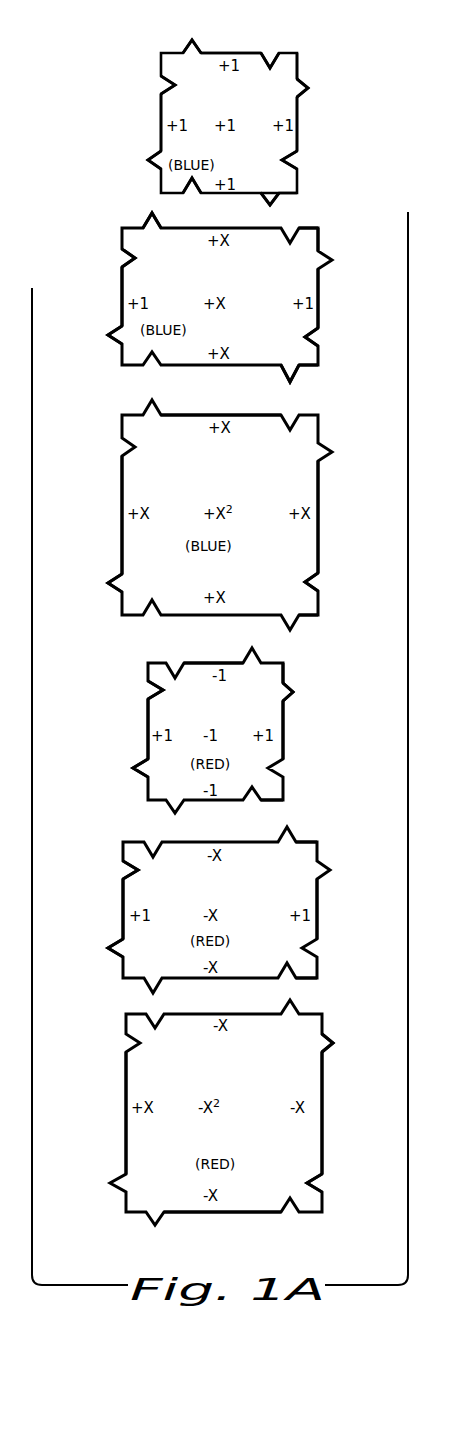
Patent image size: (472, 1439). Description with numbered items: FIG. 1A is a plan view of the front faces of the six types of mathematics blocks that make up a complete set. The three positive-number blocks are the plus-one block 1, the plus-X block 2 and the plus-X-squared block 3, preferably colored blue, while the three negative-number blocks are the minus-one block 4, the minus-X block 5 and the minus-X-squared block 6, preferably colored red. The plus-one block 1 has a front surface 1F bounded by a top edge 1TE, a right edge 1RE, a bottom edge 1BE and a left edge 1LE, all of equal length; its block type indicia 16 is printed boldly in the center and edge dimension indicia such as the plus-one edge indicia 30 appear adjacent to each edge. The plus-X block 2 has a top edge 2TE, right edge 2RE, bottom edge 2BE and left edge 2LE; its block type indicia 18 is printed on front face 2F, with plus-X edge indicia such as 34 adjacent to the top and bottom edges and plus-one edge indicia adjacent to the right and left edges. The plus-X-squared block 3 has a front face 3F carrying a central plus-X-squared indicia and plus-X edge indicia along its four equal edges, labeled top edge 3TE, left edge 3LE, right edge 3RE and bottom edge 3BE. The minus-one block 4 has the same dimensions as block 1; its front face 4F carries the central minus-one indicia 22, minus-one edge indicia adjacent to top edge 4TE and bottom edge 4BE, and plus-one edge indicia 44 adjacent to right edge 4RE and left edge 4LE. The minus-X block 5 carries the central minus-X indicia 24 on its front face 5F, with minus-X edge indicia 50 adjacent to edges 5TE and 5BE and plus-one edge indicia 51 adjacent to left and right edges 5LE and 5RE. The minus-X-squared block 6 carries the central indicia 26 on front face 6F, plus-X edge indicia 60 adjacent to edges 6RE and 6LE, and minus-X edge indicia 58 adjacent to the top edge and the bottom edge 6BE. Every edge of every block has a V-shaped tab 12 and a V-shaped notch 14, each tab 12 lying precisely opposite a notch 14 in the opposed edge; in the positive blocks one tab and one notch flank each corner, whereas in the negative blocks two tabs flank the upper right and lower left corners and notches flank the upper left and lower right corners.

The +1 block 1 is at (305, 125).
The +X block 2 is at (330, 312).
The +X² block 3 is at (330, 505).
The −1 block 4 is at (293, 760).
The −X block 5 is at (322, 924).
The −X² block 6 is at (330, 1092).
The V-shaped tab 12 is at (189, 44).
The V-shaped notch 14 is at (271, 58).
The +1 block type indicia 16 is at (240, 125).
The +X block type indicia 18 is at (222, 316).
The −1 block type indicia 22 is at (235, 730).
The −X block type indicia 24 is at (245, 910).
The −X² block type indicia 26 is at (245, 1105).
The +1 edge indicia 30 is at (240, 186).
The +X edge indicia 34 is at (210, 250).
The +1 edge indicia 44 is at (185, 730).
The top edge term -X of piece 5 50 is at (215, 868).
The left edge term +1 of piece 5 51 is at (138, 930).
The −X edge indicia 58 is at (225, 1050).
The +X edge indicia 60 is at (143, 1130).
The top edge 1TE is at (245, 40).
The front surface 1F is at (297, 64).
The left edge 1LE is at (161, 128).
The right edge 1RE is at (297, 148).
The bottom edge 1BE is at (285, 194).
The top edge 2TE is at (305, 228).
The front face 2F is at (318, 256).
The left edge 2LE is at (122, 292).
The right edge 2RE is at (318, 294).
The bottom edge 2BE is at (305, 365).
The top edge of piece 3 3TE is at (264, 415).
The left edge of piece 3 3LE is at (122, 498).
The front face 3F is at (318, 479).
The right edge of piece 3 3RE is at (318, 556).
The bottom edge of piece 3 3BE is at (305, 615).
The top edge 4TE is at (222, 663).
The left edge 4LE is at (148, 732).
The right edge 4RE is at (283, 680).
The front face 4F is at (283, 732).
The bottom edge 4BE is at (270, 800).
The top edge 5TE is at (317, 845).
The left edge 5LE is at (123, 895).
The front face 5F is at (317, 898).
The right edge 5RE is at (317, 938).
The bottom edge 5BE is at (305, 978).
The left edge 6LE is at (126, 1082).
The front face 6F is at (322, 1129).
The right edge 6RE is at (322, 1163).
The bottom edge 6BE is at (262, 1213).